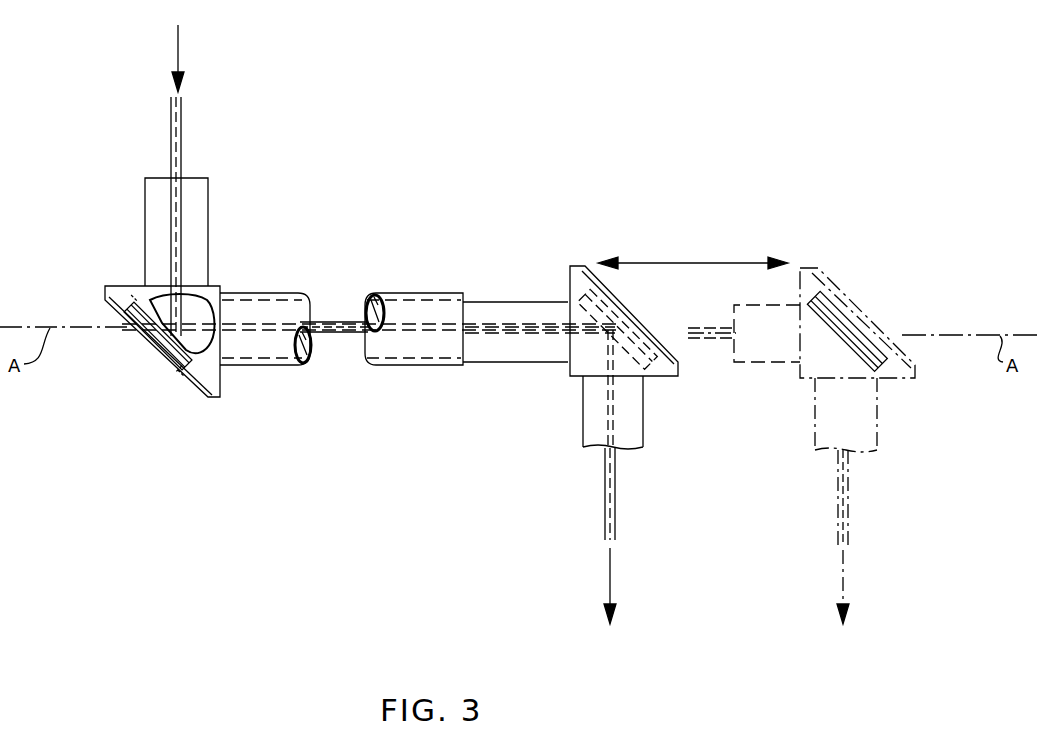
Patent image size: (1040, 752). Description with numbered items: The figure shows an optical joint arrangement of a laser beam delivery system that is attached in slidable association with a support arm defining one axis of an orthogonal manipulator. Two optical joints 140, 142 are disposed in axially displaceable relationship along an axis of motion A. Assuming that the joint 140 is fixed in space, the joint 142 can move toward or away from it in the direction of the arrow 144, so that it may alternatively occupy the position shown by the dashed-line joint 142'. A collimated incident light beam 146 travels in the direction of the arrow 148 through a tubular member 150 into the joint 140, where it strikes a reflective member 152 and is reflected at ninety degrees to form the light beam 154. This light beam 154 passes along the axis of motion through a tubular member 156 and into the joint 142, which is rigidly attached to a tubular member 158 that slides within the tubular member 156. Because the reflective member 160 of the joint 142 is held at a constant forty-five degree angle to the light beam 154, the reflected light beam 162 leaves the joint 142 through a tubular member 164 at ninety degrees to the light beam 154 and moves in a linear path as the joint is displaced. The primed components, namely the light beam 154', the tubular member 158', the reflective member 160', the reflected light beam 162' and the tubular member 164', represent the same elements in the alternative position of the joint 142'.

The optical joint 140 is at (108, 293).
The optical joint 142 is at (646, 340).
The optical joint in alternative position 142' is at (881, 341).
The arrow 144 is at (722, 262).
The collimated incident light beam 146 is at (183, 137).
The arrow 148 is at (178, 56).
The tubular member 150 is at (208, 210).
The reflective member 152 is at (166, 357).
The light beam 154 is at (334, 349).
The light beam in alternative position 154' is at (695, 319).
The tubular member 156 is at (278, 367).
The tubular member 158 is at (539, 359).
The tubular member in alternative position 158' is at (767, 360).
The reflective member 160 is at (617, 323).
The reflective member in alternative position 160' is at (866, 324).
The reflected light beam 162 is at (577, 477).
The reflected light beam in alternative position 162' is at (881, 537).
The tubular member 164 is at (584, 418).
The tubular member in alternative position 164' is at (814, 427).